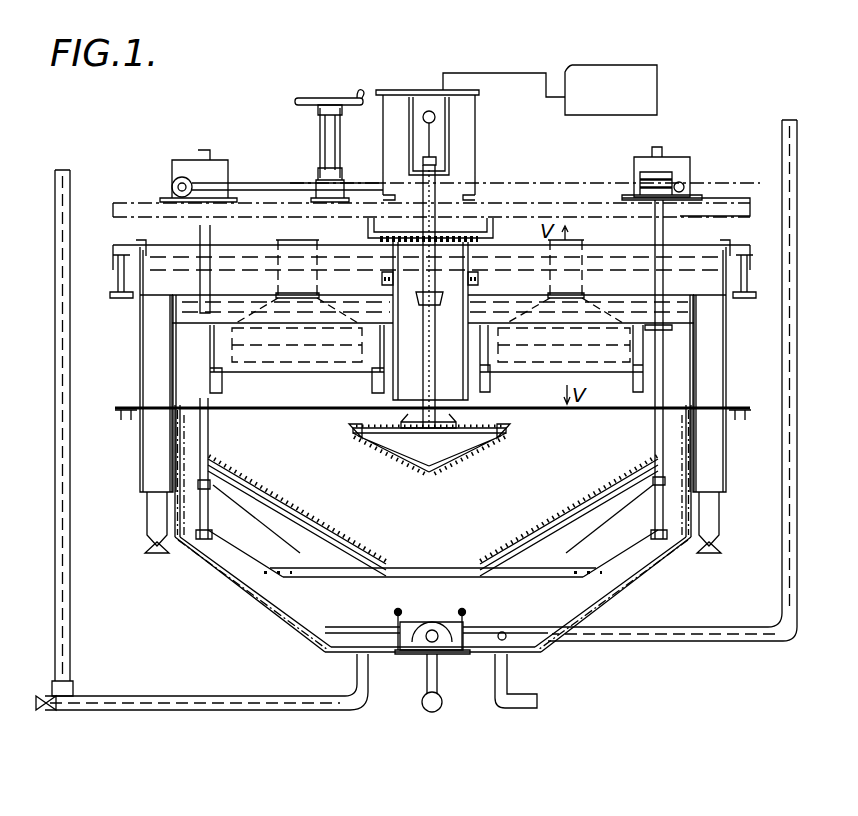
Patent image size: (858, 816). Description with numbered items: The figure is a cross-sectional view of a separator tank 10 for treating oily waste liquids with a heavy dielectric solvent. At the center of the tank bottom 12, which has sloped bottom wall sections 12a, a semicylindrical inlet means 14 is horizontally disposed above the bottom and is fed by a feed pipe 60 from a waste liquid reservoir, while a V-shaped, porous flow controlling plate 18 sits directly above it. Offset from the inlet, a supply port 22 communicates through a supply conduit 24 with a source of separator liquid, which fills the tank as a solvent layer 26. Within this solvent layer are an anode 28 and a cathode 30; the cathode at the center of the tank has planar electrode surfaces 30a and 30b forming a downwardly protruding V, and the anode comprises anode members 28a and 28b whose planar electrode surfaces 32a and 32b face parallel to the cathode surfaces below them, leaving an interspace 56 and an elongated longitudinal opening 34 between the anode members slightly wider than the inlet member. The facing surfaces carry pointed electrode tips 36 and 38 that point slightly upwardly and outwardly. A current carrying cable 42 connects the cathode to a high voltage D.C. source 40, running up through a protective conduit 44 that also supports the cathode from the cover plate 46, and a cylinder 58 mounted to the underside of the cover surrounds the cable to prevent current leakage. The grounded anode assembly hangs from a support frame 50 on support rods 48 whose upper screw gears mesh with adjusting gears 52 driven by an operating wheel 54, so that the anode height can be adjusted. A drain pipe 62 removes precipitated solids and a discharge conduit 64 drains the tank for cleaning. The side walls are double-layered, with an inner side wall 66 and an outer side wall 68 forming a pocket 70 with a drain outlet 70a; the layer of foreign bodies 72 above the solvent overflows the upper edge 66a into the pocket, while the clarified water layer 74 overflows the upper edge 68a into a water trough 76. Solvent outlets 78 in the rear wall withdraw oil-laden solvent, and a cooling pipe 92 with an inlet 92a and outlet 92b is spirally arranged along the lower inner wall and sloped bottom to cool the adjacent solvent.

The separator tank 10 is at (744, 190).
The tank bottom 12 is at (446, 654).
The sloped bottom wall sections 12a is at (262, 602).
The inlet means 14 is at (444, 624).
The flow controlling plate 18 is at (413, 612).
The supply port 22 is at (362, 652).
The supply conduit 24 is at (186, 697).
The solvent layer 26 is at (298, 403).
The anode 28 is at (574, 514).
The anode member 28a is at (296, 512).
The anode member 28b is at (576, 480).
The cathode 30 is at (386, 428).
The planar electrode surface 30a is at (397, 461).
The planar electrode surface 30b is at (462, 452).
The planar electrode surface 32a is at (337, 519).
The planar electrode surface 32b is at (612, 482).
The elongated longitudinal opening 34 is at (436, 558).
The pointed electrode tips 36 is at (296, 490).
The pointed electrode tips 38 is at (352, 436).
The high voltage D.C. source 40 is at (624, 108).
The current carrying cable 42 is at (436, 248).
The protective conduit 44 is at (430, 268).
The cover plate 46 is at (572, 205).
The support rods 48 is at (210, 432).
The support frame 50 is at (507, 572).
The adjusting gears 52 is at (684, 184).
The operating wheel 54 is at (303, 98).
The interspace 56 is at (450, 518).
The cylinder 58 is at (466, 397).
The feed pipe 60 is at (797, 528).
The drain pipe 62 is at (538, 690).
The discharge conduit 64 is at (421, 703).
The inner side wall 66 is at (172, 388).
The upper edge 66a is at (172, 297).
The outer side wall 68 is at (141, 380).
The upper edge 68a is at (141, 246).
The pocket 70 is at (152, 350).
The drain outlet 70a is at (144, 548).
The layer of foreign bodies 72 is at (584, 310).
The water layer 74 is at (568, 280).
The water trough 76 is at (117, 264).
The solvent outlets 78 is at (276, 355).
The cooling pipe 92 is at (222, 569).
The inlet 92a is at (115, 430).
The outlet 92b is at (735, 413).